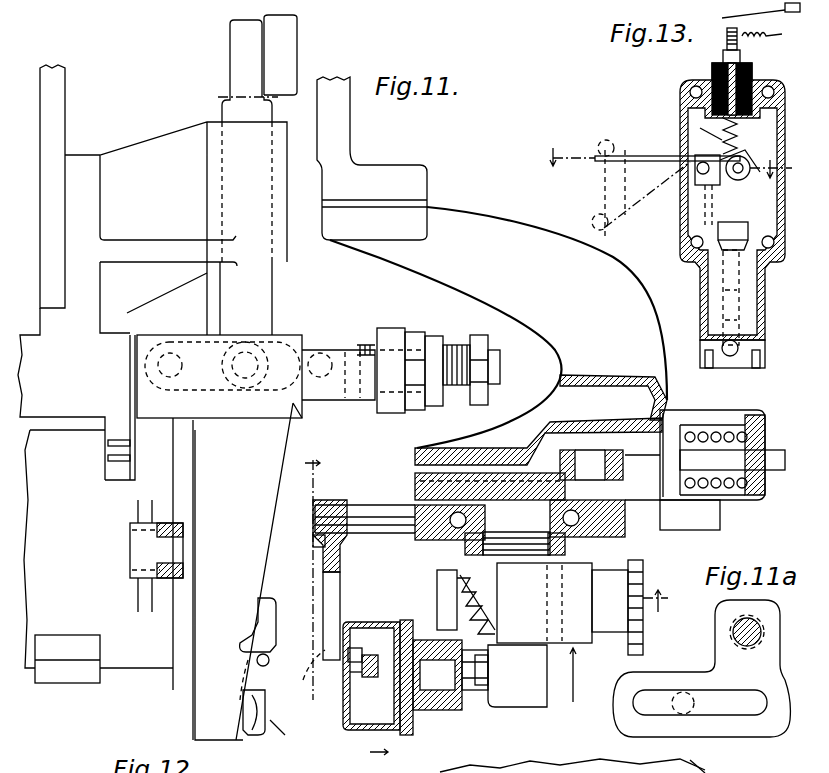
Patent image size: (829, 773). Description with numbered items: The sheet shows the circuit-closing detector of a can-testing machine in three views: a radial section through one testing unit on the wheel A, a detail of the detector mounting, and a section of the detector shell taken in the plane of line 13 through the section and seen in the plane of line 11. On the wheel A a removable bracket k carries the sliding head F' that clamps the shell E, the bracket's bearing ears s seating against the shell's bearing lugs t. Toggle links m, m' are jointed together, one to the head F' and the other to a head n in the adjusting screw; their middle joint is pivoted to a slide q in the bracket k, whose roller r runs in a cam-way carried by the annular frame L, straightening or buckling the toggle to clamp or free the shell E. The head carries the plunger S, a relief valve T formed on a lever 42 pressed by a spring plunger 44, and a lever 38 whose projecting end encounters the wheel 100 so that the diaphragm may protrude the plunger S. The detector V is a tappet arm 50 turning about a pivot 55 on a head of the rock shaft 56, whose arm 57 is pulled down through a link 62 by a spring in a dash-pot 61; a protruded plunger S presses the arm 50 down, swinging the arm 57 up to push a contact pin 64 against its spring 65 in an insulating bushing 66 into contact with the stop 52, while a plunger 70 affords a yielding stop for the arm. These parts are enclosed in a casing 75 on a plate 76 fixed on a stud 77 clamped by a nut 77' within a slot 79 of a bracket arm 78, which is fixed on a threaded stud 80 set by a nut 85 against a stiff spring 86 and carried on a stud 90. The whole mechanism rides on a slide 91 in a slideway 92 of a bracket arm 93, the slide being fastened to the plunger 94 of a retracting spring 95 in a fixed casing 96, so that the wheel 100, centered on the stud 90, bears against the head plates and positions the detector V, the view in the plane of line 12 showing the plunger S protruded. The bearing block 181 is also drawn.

In FIG. 11, the wheel A is at (66, 110).
In FIG. 11, the roller r is at (290, 42).
In FIG. 11, the annular frame L is at (372, 158).
In FIG. 11, the slide q is at (248, 216).
In FIG. 11, the toggle link m is at (219, 363).
In FIG. 11, the toggle link m' is at (338, 353).
In FIG. 11, the head n is at (355, 355).
In FIG. 11, the bracket k is at (61, 394).
In FIG. 11, the shell E is at (98, 549).
In FIG. 11, the bearing block 181 is at (68, 675).
In FIG. 11, the bearing ear s is at (108, 443).
In FIG. 11, the bearing lug t is at (108, 462).
In FIG. 11, the bearing e is at (130, 530).
In FIG. 11, the head F' is at (237, 571).
In FIG. 11, the relief valve T is at (256, 612).
In FIG. 11, the spring plunger 44 is at (258, 734).
In FIG. 11, the wheel 100 is at (420, 540).
In FIG. 11, the plunger S is at (330, 560).
In FIG. 13, the plunger S is at (600, 146).
In FIG. 11, the tappet arm 50 is at (320, 570).
In FIG. 13, the tappet arm 50 is at (640, 157).
In FIG. 11, the rock shaft 56 is at (340, 622).
In FIG. 11, the lever 38 is at (312, 502).
In FIG. 11, the section line 13 is at (349, 602).
In FIG. 11, the detector V is at (408, 590).
In FIG. 13, the detector V is at (641, 196).
In FIG. 11, the slideway 92 is at (415, 456).
In FIG. 11, the slide 91 is at (415, 488).
In FIG. 11, the bracket arm 93 is at (498, 327).
In FIG. 11, the plunger 94 is at (668, 508).
In FIG. 11, the retracting spring 95 is at (742, 500).
In FIG. 11, the casing 96 is at (760, 424).
In FIG. 11, the nut 85 is at (640, 598).
In FIG. 11, the section line 12 is at (484, 658).
In FIG. 11, the spring 86 is at (480, 630).
In FIG. 11, the stud 90 is at (517, 676).
In FIG. 11, the casing 75 is at (370, 731).
In FIG. 13, the casing 75 is at (659, 252).
In FIG. 11, the plate 76 is at (410, 728).
In FIG. 11, the stud 77 is at (437, 675).
In FIG. 11A, the stud 77 is at (703, 703).
In FIG. 11, the slot 79 is at (455, 700).
In FIG. 11A, the slot 79 is at (673, 695).
In FIG. 11, the nut 77' is at (504, 696).
In FIG. 11, the stem 62 is at (362, 680).
In FIG. 13, the stem 62 is at (750, 226).
In FIG. 11, the arm 57 is at (350, 665).
In FIG. 13, the arm 57 is at (752, 165).
In FIG. 11, the plunger 70 is at (305, 688).
In FIG. 13, the plunger 70 is at (707, 190).
In FIG. 11, the lever 42 is at (287, 737).
In FIG. 11A, the bracket arm 78 is at (701, 668).
In FIG. 11A, the stud 80 is at (760, 628).
In FIG. 13, the contact stop 52 is at (761, 9).
In FIG. 13, the insulating bushing 66 is at (752, 74).
In FIG. 13, the spring 65 is at (740, 135).
In FIG. 13, the contact pin 64 is at (722, 135).
In FIG. 13, the section line 11 is at (678, 159).
In FIG. 13, the pivot 55 is at (690, 185).
In FIG. 13, the dash-pot 61 is at (737, 312).